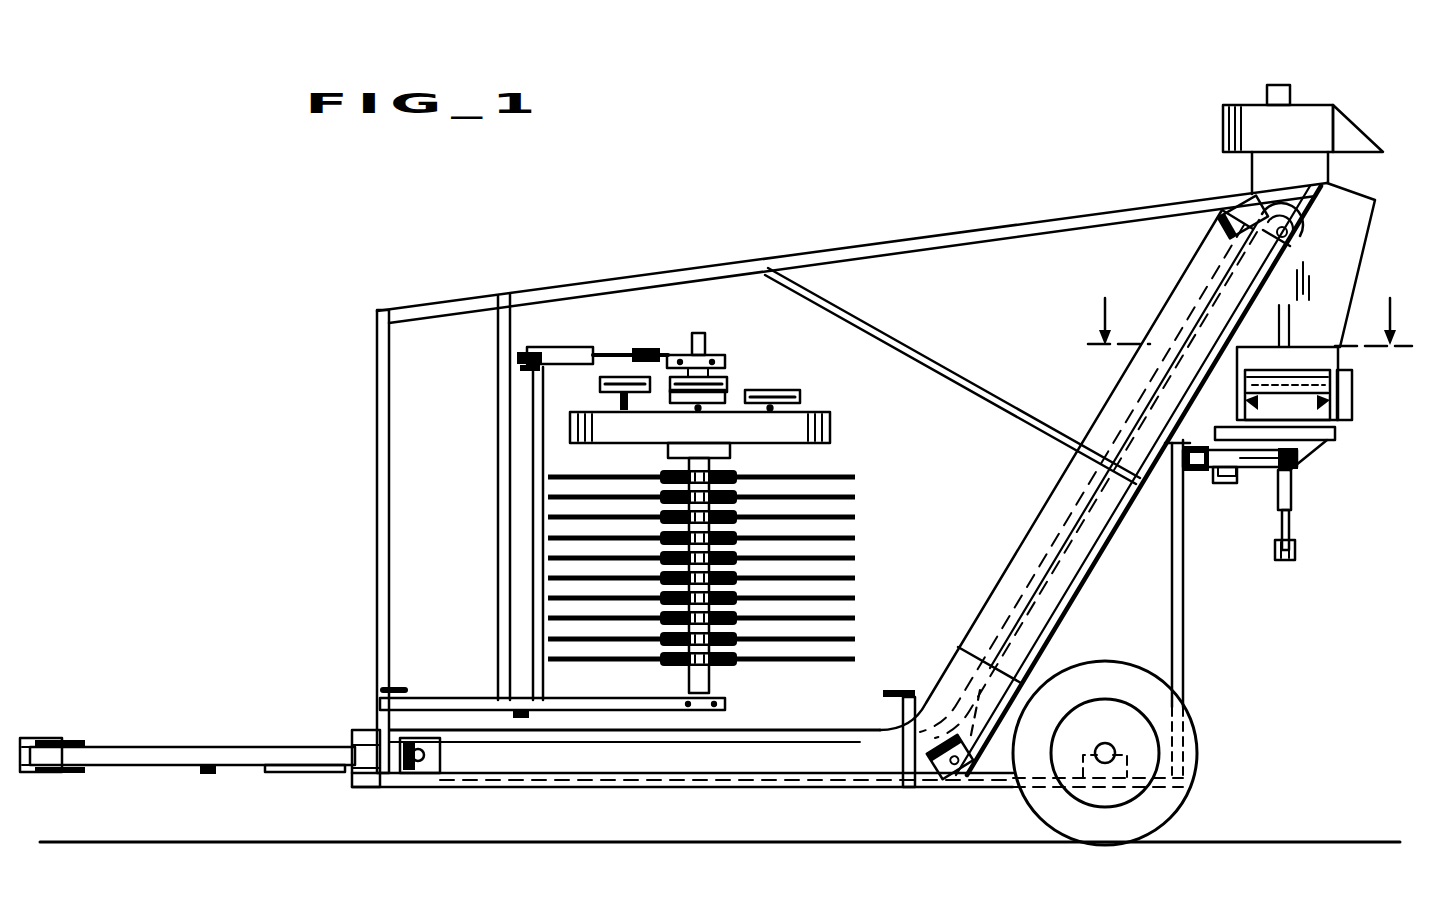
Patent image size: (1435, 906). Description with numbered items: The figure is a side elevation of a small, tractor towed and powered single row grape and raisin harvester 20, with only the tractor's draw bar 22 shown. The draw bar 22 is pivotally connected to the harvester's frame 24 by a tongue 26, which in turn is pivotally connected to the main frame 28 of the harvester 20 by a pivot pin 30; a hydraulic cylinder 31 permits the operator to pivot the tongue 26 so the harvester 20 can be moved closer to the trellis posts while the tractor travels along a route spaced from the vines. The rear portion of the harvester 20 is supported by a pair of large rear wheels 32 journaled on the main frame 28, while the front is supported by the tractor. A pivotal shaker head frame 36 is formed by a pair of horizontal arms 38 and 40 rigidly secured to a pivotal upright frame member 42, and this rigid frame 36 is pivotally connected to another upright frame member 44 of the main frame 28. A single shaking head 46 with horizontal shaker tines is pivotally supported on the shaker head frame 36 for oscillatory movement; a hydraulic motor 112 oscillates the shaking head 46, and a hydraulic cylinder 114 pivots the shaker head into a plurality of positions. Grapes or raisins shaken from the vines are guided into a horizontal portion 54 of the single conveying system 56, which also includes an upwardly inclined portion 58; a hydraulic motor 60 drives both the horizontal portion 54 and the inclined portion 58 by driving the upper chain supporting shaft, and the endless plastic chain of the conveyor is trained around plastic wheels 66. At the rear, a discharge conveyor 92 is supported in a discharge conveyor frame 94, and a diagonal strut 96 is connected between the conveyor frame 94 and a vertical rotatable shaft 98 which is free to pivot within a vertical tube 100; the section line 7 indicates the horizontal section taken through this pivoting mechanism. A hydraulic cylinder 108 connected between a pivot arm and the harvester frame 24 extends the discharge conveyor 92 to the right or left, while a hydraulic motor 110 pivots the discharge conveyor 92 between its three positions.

The grape and raisin harvester 20 is at (370, 265).
The draw bar 22 is at (38, 738).
The frame 24 is at (372, 579).
The tongue 26 is at (150, 746).
The main frame 28 is at (520, 288).
The pivot pin 30 is at (365, 730).
The hydraulic cylinder 31 is at (300, 776).
The rear wheels 32 is at (1134, 753).
The shaker head frame 36 is at (532, 491).
The horizontal arm 38 is at (660, 352).
The horizontal arm 40 is at (553, 700).
The pivotal upright frame member 42 is at (540, 514).
The upright frame member 44 is at (505, 548).
The shaking head 46 is at (830, 464).
The horizontal portion 54 is at (720, 730).
The single conveying system 56 is at (1025, 515).
The upwardly inclined portion 58 is at (1140, 392).
The hydraulic motor 60 is at (1296, 240).
The plastic wheels 66 is at (960, 782).
The section line 7— 7 is at (1250, 322).
The discharge conveyor 92 is at (1346, 360).
The discharge conveyor frame 94 is at (1352, 410).
The diagonal strut 96 is at (1297, 553).
The vertical rotatable shaft 98 is at (1291, 527).
The vertical tube 100 is at (1293, 490).
The hydraulic cylinder 108 is at (1240, 476).
The hydraulic motor 110 is at (1222, 484).
The hydraulic motor 112 is at (715, 342).
The hydraulic cylinder 114 is at (572, 345).